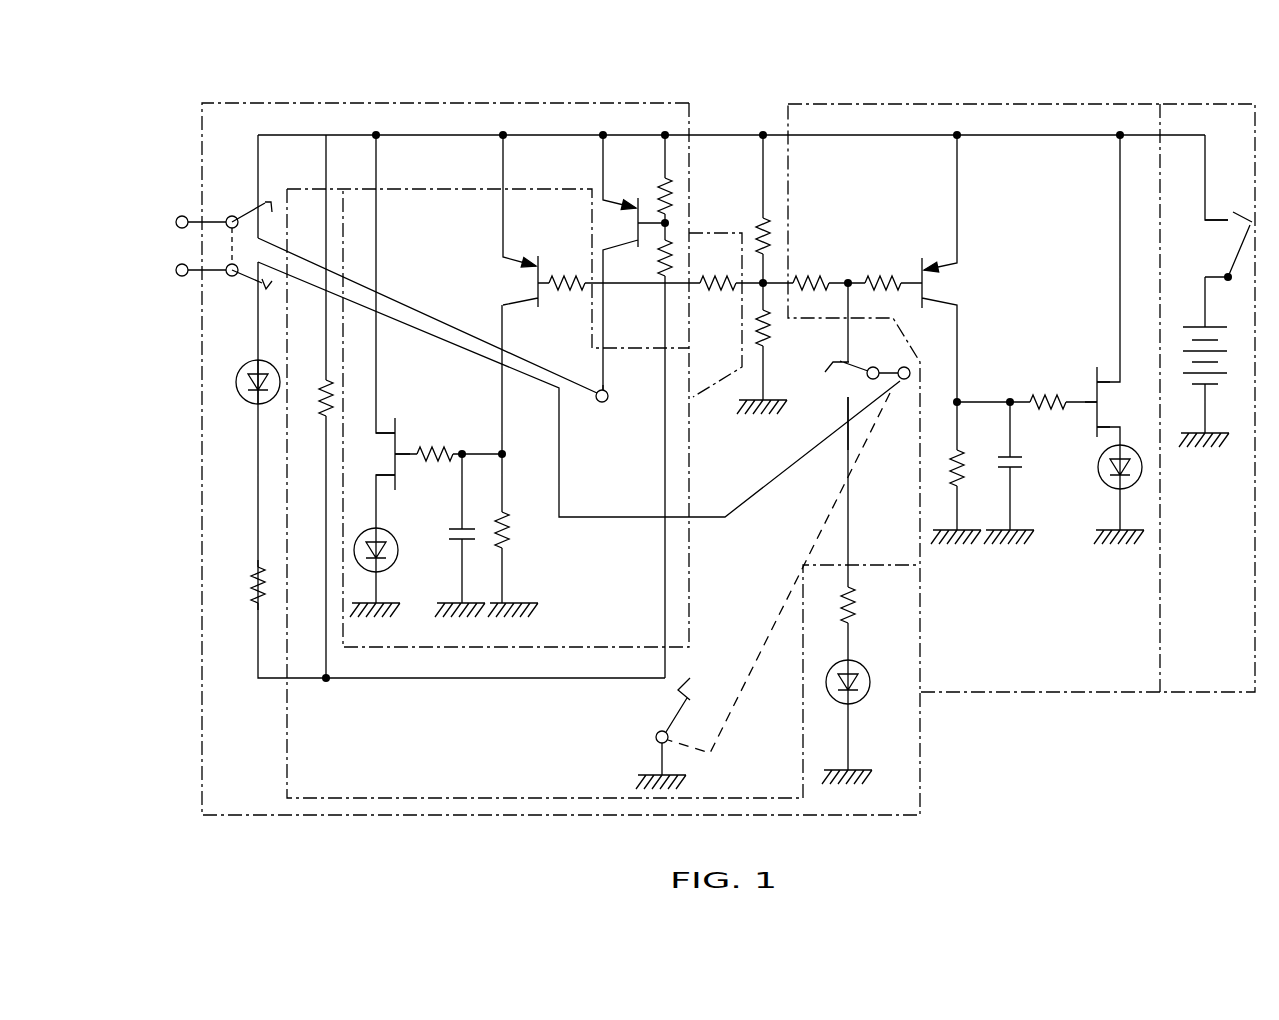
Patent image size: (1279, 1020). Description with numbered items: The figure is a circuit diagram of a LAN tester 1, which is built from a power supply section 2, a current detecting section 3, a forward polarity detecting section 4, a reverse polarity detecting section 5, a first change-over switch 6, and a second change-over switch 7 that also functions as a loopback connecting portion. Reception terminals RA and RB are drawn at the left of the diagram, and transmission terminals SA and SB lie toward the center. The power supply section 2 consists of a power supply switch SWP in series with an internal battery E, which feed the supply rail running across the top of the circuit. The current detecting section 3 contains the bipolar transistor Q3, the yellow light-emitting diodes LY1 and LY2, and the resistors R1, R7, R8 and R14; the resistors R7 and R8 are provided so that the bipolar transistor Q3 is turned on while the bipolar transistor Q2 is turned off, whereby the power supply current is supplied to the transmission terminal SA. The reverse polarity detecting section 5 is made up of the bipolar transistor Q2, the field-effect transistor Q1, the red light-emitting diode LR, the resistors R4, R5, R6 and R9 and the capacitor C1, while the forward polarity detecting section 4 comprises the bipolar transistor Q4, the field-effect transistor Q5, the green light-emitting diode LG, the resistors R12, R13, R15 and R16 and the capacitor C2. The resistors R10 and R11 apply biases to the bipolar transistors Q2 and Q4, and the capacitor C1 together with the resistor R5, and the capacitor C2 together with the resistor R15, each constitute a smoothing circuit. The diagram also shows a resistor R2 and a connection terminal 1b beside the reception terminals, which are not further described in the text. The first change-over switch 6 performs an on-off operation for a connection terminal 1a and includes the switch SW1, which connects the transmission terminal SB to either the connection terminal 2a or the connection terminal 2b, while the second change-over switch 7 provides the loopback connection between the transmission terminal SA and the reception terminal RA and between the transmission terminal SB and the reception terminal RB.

The LAN tester 1 is at (728, 106).
The connection terminal 1a is at (656, 712).
The switch contacts 1b is at (224, 255).
The power supply section 2 is at (1200, 692).
The connection terminal 2a is at (827, 422).
The connection terminal 2b is at (867, 357).
The current detecting section 3 is at (417, 798).
The forward polarity detecting section 4 is at (1043, 692).
The reverse polarity detecting section 5 is at (552, 648).
The first change-over switch 6 is at (757, 677).
The second change-over switch 7 is at (438, 337).
The reception terminal RA is at (152, 222).
The reception terminal RB is at (153, 270).
The transmission terminal SA is at (599, 411).
The transmission terminal SB is at (897, 420).
The switch SW1 is at (779, 573).
The power supply switch SWP is at (1213, 244).
The internal battery E is at (1217, 355).
The resistor R1 is at (242, 582).
The resistor R2 is at (312, 388).
The resistor R4 is at (435, 436).
The resistor R5 is at (522, 530).
The resistor R6 is at (566, 266).
The resistor R7 is at (649, 189).
The resistor R8 is at (642, 260).
The resistor R9 is at (717, 266).
The resistor R10 is at (738, 228).
The resistor R11 is at (789, 332).
The resistor R12 is at (814, 266).
The resistor R13 is at (881, 266).
The resistor R14 is at (875, 605).
The resistor R15 is at (976, 453).
The resistor R16 is at (1046, 385).
The capacitor C1 is at (444, 534).
The capacitor C2 is at (1030, 465).
The field-effect transistor Q1 is at (381, 454).
The bipolar transistor Q2 is at (508, 221).
The bipolar transistor Q3 is at (615, 262).
The bipolar transistor Q4 is at (949, 268).
The field-effect transistor Q5 is at (1112, 402).
The light-emitting diode LY1 is at (241, 397).
The light-emitting diode LY2 is at (861, 698).
The light-emitting diode LR is at (387, 564).
The light-emitting diode LG is at (1125, 484).